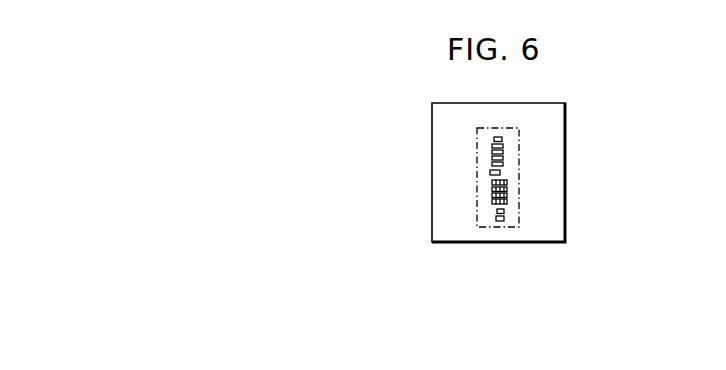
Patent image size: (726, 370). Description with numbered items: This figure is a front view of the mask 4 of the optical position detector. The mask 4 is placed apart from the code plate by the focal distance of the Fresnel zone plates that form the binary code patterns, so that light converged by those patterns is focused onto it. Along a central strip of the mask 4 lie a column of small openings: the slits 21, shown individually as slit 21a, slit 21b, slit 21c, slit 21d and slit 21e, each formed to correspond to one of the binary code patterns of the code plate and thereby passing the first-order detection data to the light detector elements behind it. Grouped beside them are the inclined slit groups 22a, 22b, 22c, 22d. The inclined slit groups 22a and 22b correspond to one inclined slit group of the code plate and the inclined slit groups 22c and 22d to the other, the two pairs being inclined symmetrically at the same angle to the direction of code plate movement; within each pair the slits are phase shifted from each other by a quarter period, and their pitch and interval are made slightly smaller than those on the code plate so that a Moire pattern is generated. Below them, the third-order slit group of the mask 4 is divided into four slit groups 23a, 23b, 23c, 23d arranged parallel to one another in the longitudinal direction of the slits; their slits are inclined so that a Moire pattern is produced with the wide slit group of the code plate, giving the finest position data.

The mask 4 is at (464, 228).
The slits 21 is at (504, 219).
The slit 21a is at (493, 139).
The slit 21b is at (492, 146).
The slit 21c is at (491, 168).
The slit 21d is at (491, 174).
The slit 21e is at (505, 212).
The inclined slit group 22a is at (497, 152).
The inclined slit group 22b is at (497, 158).
The inclined slit group 22c is at (497, 164).
The inclined slit group 22d is at (510, 167).
The slit group 23a is at (499, 182).
The slit group 23b is at (499, 189).
The slit group 23c is at (499, 195).
The slit group 23d is at (510, 204).